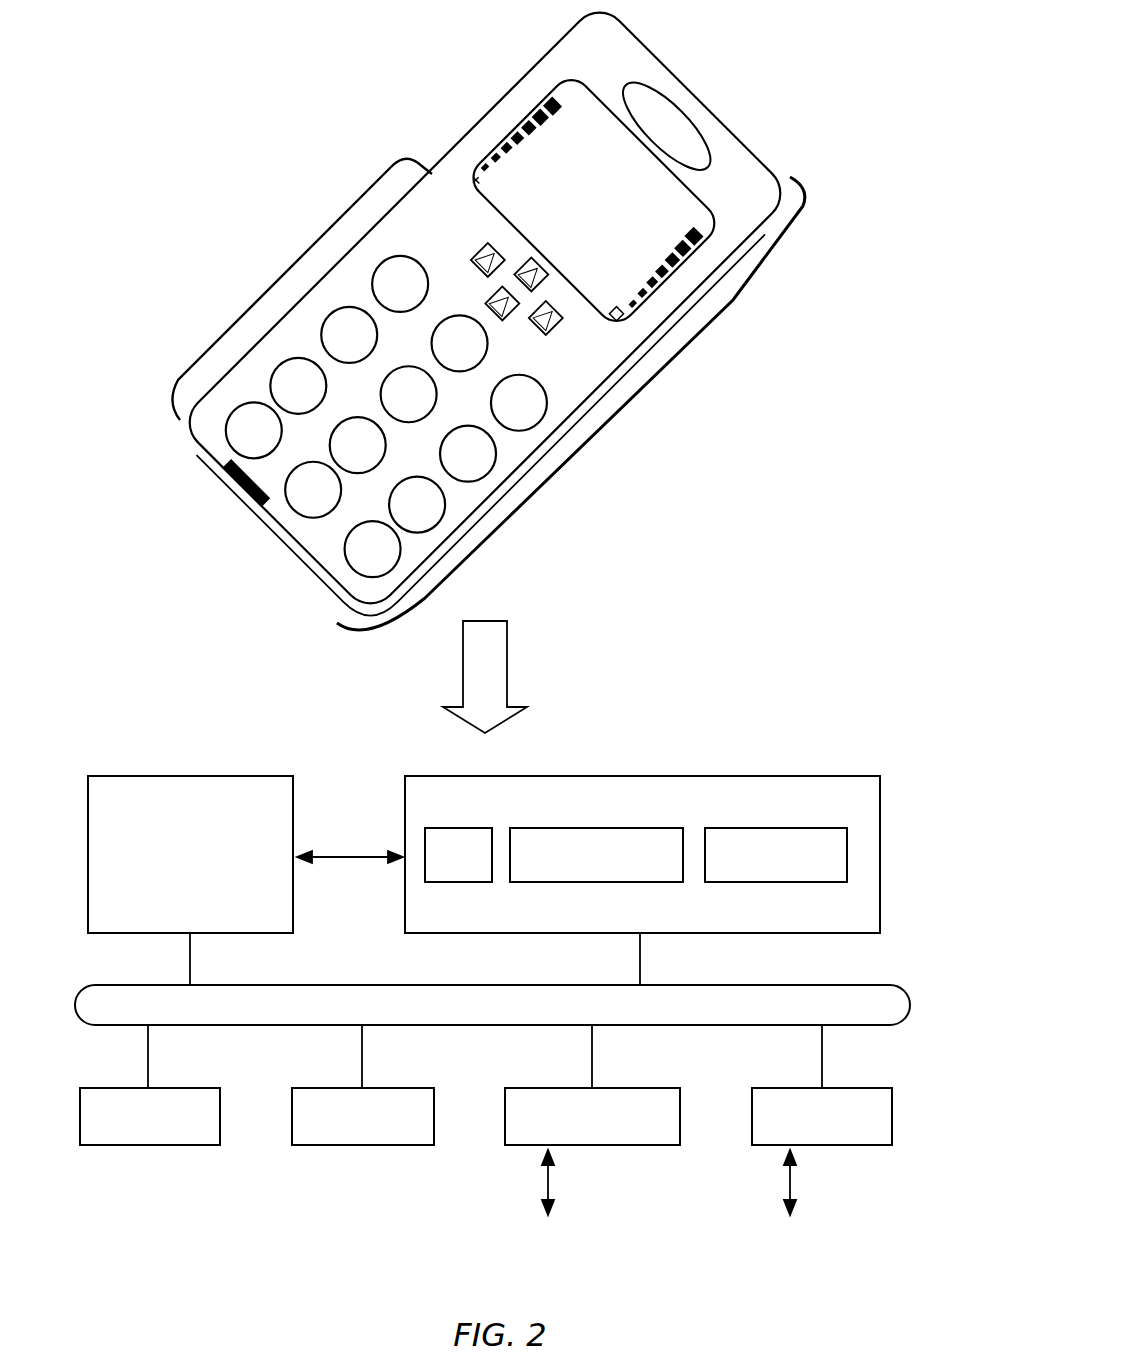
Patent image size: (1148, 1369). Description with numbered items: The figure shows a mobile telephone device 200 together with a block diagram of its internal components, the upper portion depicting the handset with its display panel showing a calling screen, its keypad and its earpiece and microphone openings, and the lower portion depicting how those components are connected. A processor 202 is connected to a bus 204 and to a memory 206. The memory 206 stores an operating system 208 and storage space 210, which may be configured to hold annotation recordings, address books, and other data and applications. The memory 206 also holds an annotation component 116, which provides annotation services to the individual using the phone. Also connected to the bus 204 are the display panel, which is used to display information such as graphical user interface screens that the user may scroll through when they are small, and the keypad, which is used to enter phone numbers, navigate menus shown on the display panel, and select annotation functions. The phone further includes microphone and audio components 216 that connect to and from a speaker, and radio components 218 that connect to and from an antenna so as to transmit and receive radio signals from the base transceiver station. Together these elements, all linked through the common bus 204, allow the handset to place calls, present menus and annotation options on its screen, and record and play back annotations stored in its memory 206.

The mobile telephone device 200 is at (471, 315).
The processor 202 is at (193, 776).
The bus 204 is at (328, 985).
The memory 206 is at (652, 776).
The operating system 208 is at (450, 882).
The storage space 210 is at (778, 882).
The microphone and audio components 216 is at (612, 1145).
The radio components 218 is at (825, 1145).
The annotation component 116 is at (620, 882).